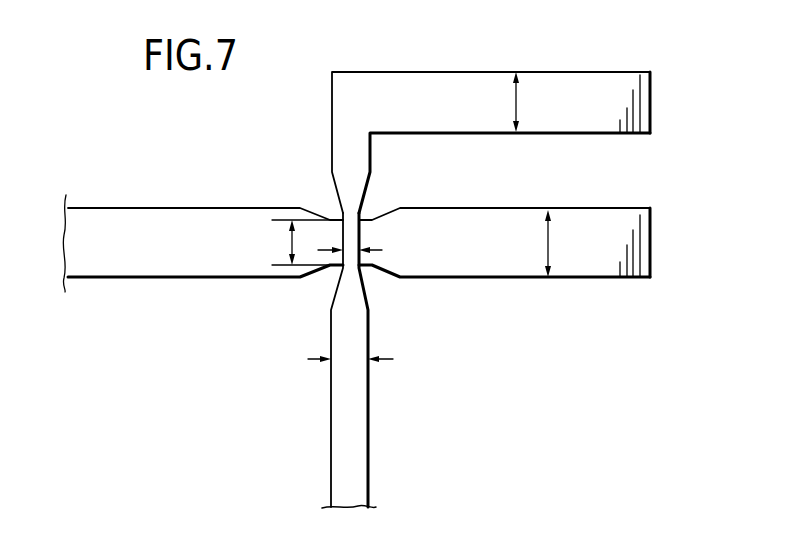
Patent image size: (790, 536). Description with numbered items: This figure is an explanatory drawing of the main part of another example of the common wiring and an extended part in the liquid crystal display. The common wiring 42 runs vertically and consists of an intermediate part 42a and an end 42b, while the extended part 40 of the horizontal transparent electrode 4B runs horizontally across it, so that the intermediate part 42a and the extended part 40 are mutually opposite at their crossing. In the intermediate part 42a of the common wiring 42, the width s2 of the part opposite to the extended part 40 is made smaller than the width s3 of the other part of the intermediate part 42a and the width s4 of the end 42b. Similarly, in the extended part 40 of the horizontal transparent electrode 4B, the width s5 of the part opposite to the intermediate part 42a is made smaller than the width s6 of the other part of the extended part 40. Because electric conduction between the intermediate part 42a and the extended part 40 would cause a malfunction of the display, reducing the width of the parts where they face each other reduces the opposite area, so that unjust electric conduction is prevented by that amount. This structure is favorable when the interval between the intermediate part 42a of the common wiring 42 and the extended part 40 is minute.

The horizontal transparent electrode 4B is at (96, 200).
The extended part 40 is at (207, 215).
The common wiring 42 is at (386, 451).
The intermediate part 42a is at (360, 405).
The end 42b is at (592, 78).
The width of the part opposite the extended part s2 is at (360, 240).
The width of the other part of the intermediate part s3 is at (356, 348).
The width of the end s4 is at (533, 102).
The width of the part opposite the intermediate part s5 is at (291, 242).
The width of the other part of the extended part s6 is at (566, 243).